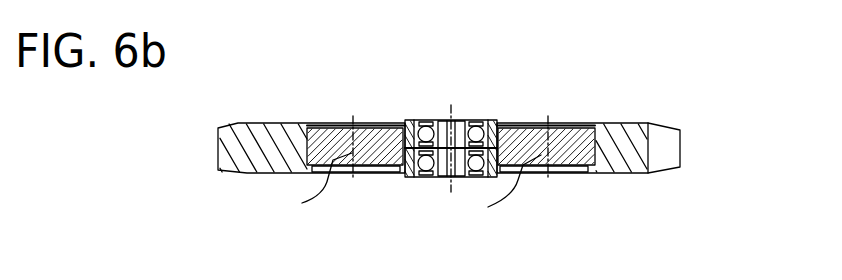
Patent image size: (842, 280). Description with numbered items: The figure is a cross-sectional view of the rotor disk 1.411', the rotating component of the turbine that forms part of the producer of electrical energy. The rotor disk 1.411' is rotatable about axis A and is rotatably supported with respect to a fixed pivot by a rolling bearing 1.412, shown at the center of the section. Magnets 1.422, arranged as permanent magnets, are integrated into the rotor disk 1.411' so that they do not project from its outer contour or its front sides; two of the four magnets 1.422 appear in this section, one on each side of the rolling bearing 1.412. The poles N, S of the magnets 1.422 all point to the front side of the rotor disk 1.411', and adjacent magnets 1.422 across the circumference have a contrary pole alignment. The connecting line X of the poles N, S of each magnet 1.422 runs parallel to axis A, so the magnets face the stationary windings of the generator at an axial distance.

The rotor disk 1.411' is at (508, 148).
The magnets 1.422 is at (322, 124).
The rolling bearing 1.412 is at (425, 120).